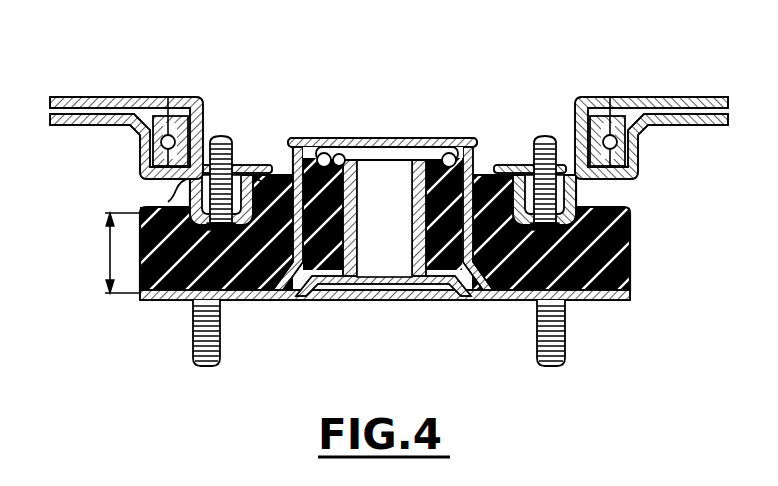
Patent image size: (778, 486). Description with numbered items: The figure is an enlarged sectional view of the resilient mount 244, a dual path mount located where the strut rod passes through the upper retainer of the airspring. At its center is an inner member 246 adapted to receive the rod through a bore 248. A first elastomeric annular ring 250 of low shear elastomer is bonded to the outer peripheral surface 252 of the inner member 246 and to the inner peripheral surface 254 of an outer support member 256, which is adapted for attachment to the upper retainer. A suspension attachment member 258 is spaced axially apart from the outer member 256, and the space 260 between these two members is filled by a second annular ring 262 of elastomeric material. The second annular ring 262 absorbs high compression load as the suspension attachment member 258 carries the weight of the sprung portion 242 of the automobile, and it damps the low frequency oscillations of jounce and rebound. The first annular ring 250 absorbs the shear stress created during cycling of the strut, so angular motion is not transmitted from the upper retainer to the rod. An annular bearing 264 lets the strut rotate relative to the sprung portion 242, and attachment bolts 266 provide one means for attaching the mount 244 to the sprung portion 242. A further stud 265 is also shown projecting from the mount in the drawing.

The sprung portion 242 is at (60, 103).
The mount 244 is at (458, 98).
The inner member 246 is at (345, 268).
The bore 248 is at (393, 262).
The first elastomeric annular ring 250 is at (446, 166).
The outer peripheral surface 252 is at (335, 158).
The inner peripheral surface 254 is at (321, 162).
The outer support member 256 is at (240, 304).
The suspension attachment member 258 is at (150, 207).
The space 260 is at (108, 246).
The second annular ring 262 is at (148, 278).
The annular bearing 264 is at (172, 130).
The lower mounting stud 265 is at (557, 365).
The attachment bolts 266 is at (543, 138).